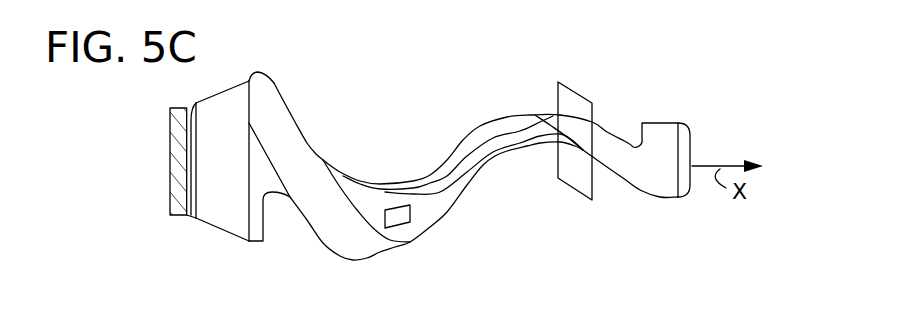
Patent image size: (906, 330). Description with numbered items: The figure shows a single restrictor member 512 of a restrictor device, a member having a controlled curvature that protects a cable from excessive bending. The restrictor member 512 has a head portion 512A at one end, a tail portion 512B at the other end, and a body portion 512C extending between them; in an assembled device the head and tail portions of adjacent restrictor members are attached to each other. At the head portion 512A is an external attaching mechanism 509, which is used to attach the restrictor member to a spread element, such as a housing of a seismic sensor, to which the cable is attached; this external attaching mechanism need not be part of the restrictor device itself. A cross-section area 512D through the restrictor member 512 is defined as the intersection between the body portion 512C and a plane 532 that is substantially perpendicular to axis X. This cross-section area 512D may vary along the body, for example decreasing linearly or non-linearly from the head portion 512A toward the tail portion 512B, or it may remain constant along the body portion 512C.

The external attaching mechanism 509 is at (170, 145).
The restrictor member 512 is at (480, 172).
The head portion 512A is at (220, 210).
The tail portion 512B is at (672, 148).
The body portion 512C is at (427, 224).
The cross-section area 512D is at (575, 132).
The plane 532 is at (573, 90).